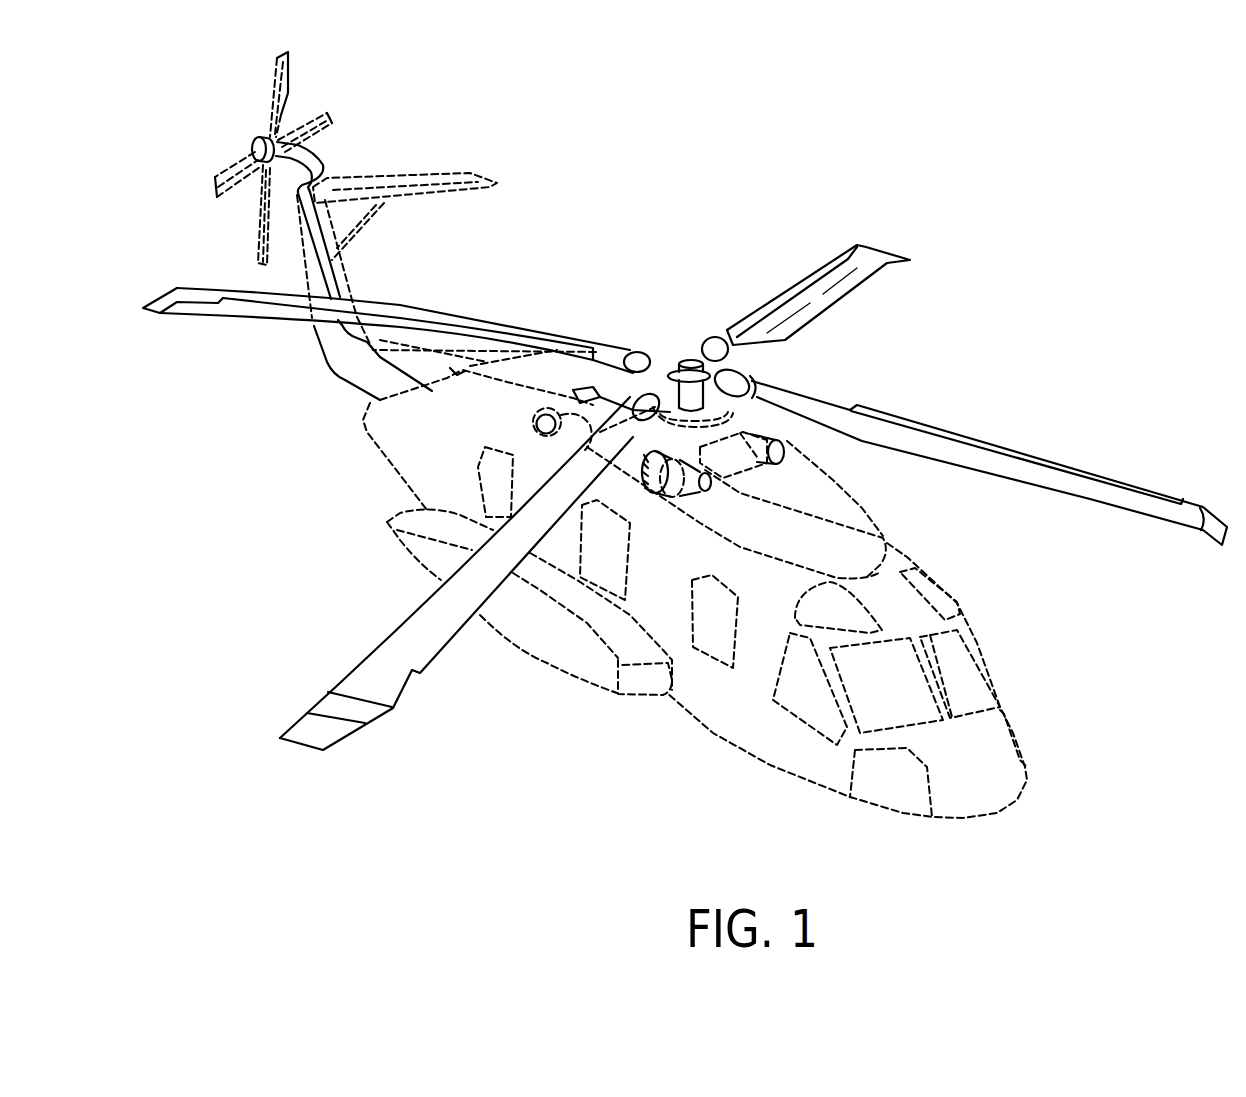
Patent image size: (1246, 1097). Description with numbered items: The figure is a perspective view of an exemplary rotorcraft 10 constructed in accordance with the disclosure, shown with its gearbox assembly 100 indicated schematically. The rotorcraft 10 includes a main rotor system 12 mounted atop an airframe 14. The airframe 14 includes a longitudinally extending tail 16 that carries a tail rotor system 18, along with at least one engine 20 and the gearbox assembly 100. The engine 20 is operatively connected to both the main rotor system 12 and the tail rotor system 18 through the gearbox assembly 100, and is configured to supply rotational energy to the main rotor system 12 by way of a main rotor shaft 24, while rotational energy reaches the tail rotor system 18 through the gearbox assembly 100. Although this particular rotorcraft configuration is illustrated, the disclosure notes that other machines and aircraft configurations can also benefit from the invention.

The rotorcraft 10 is at (1032, 152).
The main rotor system 12 is at (681, 340).
The airframe 14 is at (728, 702).
The longitudinally extending tail 16 is at (342, 377).
The tail rotor system 18 is at (320, 70).
The engine 20 is at (540, 425).
The main rotor shaft 24 is at (696, 393).
The gearbox assembly 100 is at (735, 419).